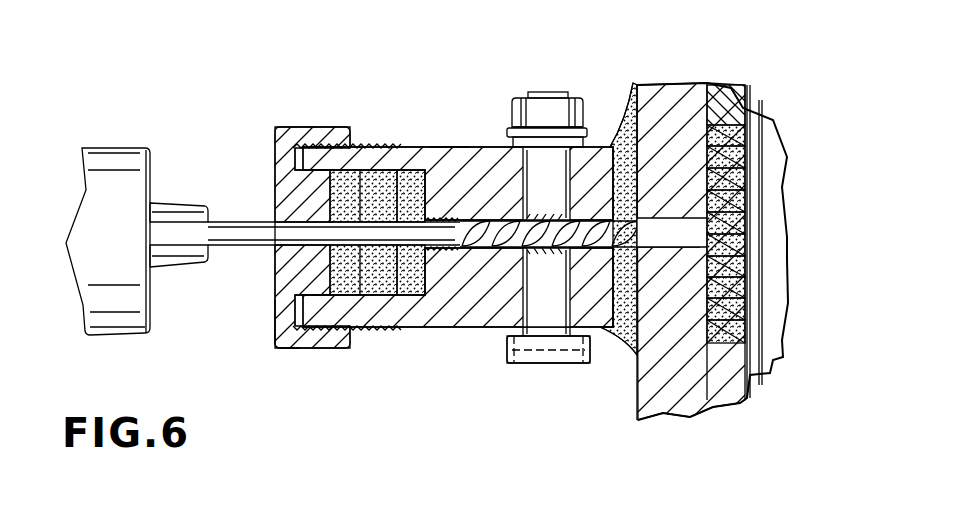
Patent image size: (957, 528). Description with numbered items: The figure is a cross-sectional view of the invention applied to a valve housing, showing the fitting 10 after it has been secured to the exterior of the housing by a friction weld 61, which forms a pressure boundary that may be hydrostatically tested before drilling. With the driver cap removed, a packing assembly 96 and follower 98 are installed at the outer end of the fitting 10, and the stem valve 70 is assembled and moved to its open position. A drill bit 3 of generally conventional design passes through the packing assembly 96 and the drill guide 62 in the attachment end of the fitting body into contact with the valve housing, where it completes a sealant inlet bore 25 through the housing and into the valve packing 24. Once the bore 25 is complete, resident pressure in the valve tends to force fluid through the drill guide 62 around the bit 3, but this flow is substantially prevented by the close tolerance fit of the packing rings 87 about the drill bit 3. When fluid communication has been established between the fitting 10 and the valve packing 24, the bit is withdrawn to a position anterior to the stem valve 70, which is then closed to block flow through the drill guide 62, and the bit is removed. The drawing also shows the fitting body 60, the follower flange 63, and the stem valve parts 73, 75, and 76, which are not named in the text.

The drill bit 3 is at (252, 247).
The fitting 10 is at (445, 136).
The valve packing 24 is at (740, 310).
The sealant inlet bore 25 is at (653, 420).
The housing 60 is at (442, 327).
The friction weld 61 is at (622, 118).
The drill guide 62 is at (602, 325).
The cap flange 63 is at (272, 332).
The stem valve 70 is at (534, 368).
The nut 73 is at (503, 357).
The bolt head 75 is at (513, 108).
The washer 76 is at (588, 142).
The packing rings 87 is at (413, 297).
The packing assembly 96 is at (377, 168).
The follower 98 is at (275, 142).